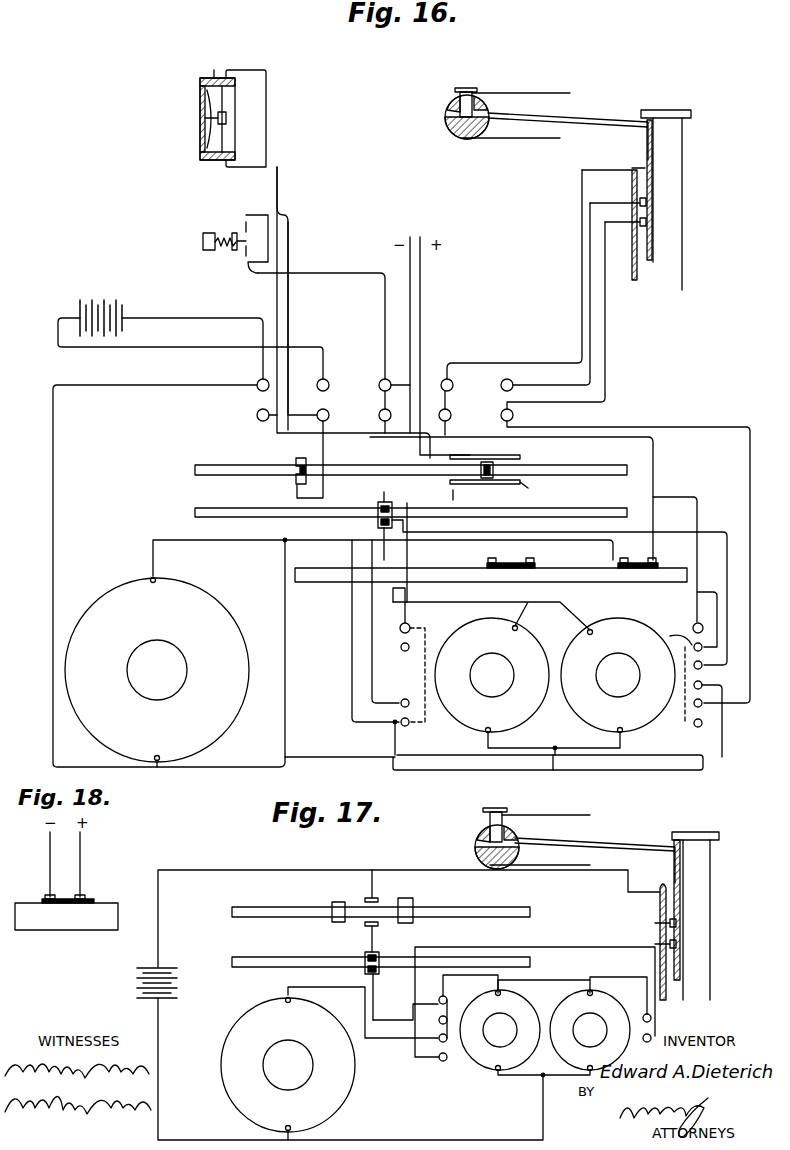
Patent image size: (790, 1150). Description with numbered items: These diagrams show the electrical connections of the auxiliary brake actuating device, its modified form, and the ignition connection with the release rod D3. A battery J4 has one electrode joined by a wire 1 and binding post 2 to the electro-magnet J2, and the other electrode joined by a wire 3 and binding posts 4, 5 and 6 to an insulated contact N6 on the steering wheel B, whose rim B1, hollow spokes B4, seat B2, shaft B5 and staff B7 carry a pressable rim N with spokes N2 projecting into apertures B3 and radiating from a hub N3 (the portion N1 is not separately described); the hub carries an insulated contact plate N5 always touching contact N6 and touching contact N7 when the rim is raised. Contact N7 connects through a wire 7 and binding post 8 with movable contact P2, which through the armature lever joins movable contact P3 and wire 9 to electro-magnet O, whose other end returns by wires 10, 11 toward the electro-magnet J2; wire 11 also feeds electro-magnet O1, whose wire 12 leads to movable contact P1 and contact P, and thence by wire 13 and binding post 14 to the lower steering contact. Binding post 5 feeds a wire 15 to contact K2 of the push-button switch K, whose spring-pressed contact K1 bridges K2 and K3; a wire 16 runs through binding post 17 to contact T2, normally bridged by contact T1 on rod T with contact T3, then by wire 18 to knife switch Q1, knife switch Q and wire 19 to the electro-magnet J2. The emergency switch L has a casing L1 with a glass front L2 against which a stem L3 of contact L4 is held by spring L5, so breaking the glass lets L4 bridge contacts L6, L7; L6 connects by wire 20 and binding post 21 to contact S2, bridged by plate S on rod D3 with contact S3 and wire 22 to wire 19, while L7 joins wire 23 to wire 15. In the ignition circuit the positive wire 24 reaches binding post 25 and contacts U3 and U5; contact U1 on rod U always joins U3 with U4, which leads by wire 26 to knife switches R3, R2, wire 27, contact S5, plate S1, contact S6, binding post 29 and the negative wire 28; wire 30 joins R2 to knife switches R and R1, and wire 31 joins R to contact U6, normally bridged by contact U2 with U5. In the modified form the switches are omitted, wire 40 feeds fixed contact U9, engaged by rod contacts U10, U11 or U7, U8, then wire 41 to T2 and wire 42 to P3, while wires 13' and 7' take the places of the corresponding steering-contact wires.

In FIG. 16, the emergency switch L is at (205, 318).
In FIG. 16, the casing L1 is at (205, 160).
In FIG. 16, the glass front L2 is at (205, 132).
In FIG. 16, the stem L3 is at (205, 118).
In FIG. 16, the contact L4 is at (226, 118).
In FIG. 16, the spring L5 is at (214, 78).
In FIG. 16, the contact L6 is at (226, 144).
In FIG. 16, the contact L7 is at (226, 100).
In FIG. 16, the wire 23 is at (268, 100).
In FIG. 16, the wire 20 is at (278, 196).
In FIG. 16, the switch K is at (218, 232).
In FIG. 16, the spring-pressed contact K1 is at (210, 250).
In FIG. 16, the contact K2 is at (246, 255).
In FIG. 16, the contact K3 is at (246, 224).
In FIG. 16, the wire 16 is at (289, 246).
In FIG. 16, the wire 15 is at (345, 276).
In FIG. 16, the negative wire 28 is at (408, 338).
In FIG. 18, the negative wire 28 is at (50, 850).
In FIG. 16, the positive wire 24 is at (421, 310).
In FIG. 18, the positive wire 24 is at (81, 850).
In FIG. 16, the battery J4 is at (96, 302).
In FIG. 17, the battery J4 is at (136, 982).
In FIG. 16, the wire 3 is at (170, 348).
In FIG. 17, the wire 3 is at (230, 870).
In FIG. 16, the wire 1 is at (54, 508).
In FIG. 17, the wire 1 is at (160, 1086).
In FIG. 16, the binding post 2 is at (257, 384).
In FIG. 16, the binding post 4 is at (328, 382).
In FIG. 16, the binding post 5 is at (389, 380).
In FIG. 16, the binding post 6 is at (452, 382).
In FIG. 16, the binding post 8 is at (510, 380).
In FIG. 16, the binding post 21 is at (257, 416).
In FIG. 16, the binding post 17 is at (329, 414).
In FIG. 16, the binding post 29 is at (384, 409).
In FIG. 16, the binding post 25 is at (451, 415).
In FIG. 16, the binding post 14 is at (513, 415).
In FIG. 16, the wire 13 is at (641, 530).
In FIG. 16, the wire 7 is at (467, 493).
In FIG. 16, the wire 27 is at (352, 680).
In FIG. 16, the rim B1 is at (448, 104).
In FIG. 17, the rim B1 is at (478, 838).
In FIG. 16, the rim N is at (478, 90).
In FIG. 17, the rim N is at (498, 808).
In FIG. 16, the apertures B3 is at (500, 98).
In FIG. 16, the pivot bearing N1 is at (447, 118).
In FIG. 17, the pivot bearing N1 is at (506, 822).
In FIG. 16, the hollow spokes B4 is at (452, 128).
In FIG. 16, the seat B2 is at (465, 142).
In FIG. 17, the seat B2 is at (484, 820).
In FIG. 16, the steering wheel B is at (536, 140).
In FIG. 17, the steering wheel B is at (555, 815).
In FIG. 16, the spokes N2 is at (584, 126).
In FIG. 17, the spokes N2 is at (640, 845).
In FIG. 16, the shaft B5 is at (683, 250).
In FIG. 17, the shaft B5 is at (711, 938).
In FIG. 16, the insulated contact plate N5 is at (647, 140).
In FIG. 17, the insulated contact plate N5 is at (680, 877).
In FIG. 16, the insulated contact N6 is at (632, 168).
In FIG. 17, the insulated contact N6 is at (660, 898).
In FIG. 16, the insulated contact N7 is at (648, 202).
In FIG. 17, the insulated contact N7 is at (676, 922).
In FIG. 16, the hub or sleeve N3 is at (638, 226).
In FIG. 17, the hub or sleeve N3 is at (676, 946).
In FIG. 16, the staff B7 is at (632, 264).
In FIG. 16, the rod U is at (222, 468).
In FIG. 17, the rod U is at (303, 908).
In FIG. 16, the contact U1 is at (488, 462).
In FIG. 16, the contact U2 is at (298, 472).
In FIG. 16, the contact U3 is at (520, 457).
In FIG. 16, the contact U4 is at (499, 487).
In FIG. 16, the contact U5 is at (296, 460).
In FIG. 16, the contact U6 is at (298, 484).
In FIG. 17, the contact U7 is at (413, 902).
In FIG. 17, the contact U8 is at (414, 922).
In FIG. 17, the fixed contact U9 is at (378, 898).
In FIG. 17, the contact U10 is at (340, 902).
In FIG. 17, the contact U11 is at (338, 922).
In FIG. 16, the rod T is at (232, 510).
In FIG. 17, the rod T is at (288, 960).
In FIG. 16, the contact T1 is at (378, 514).
In FIG. 17, the contact T1 is at (365, 966).
In FIG. 16, the contact T2 is at (388, 504).
In FIG. 17, the contact T2 is at (379, 954).
In FIG. 16, the contact T3 is at (384, 540).
In FIG. 17, the contact T3 is at (384, 997).
In FIG. 16, the wire 26 is at (408, 604).
In FIG. 16, the wire 18 is at (733, 582).
In FIG. 16, the wire 22 is at (352, 533).
In FIG. 16, the wire 31 is at (664, 500).
In FIG. 16, the wire 12 is at (718, 634).
In FIG. 17, the wire 12 is at (556, 982).
In FIG. 16, the release rod D3 is at (310, 582).
In FIG. 18, the release rod D3 is at (64, 930).
In FIG. 16, the contact plate S is at (636, 570).
In FIG. 16, the contact plate S1 is at (508, 568).
In FIG. 16, the contact S2 is at (656, 562).
In FIG. 18, the contact S2 is at (60, 904).
In FIG. 16, the contact S3 is at (620, 562).
In FIG. 16, the contact S5 is at (535, 564).
In FIG. 18, the contact S5 is at (86, 894).
In FIG. 16, the contact S6 is at (488, 570).
In FIG. 18, the contact S6 is at (46, 894).
In FIG. 16, the wire 19 is at (730, 766).
In FIG. 17, the wire 19 is at (287, 987).
In FIG. 16, the electro-magnet J2 is at (95, 606).
In FIG. 17, the electro-magnet J2 is at (236, 1028).
In FIG. 16, the electro-magnet O1 is at (455, 712).
In FIG. 17, the electro-magnet O1 is at (488, 1064).
In FIG. 16, the electro-magnet O is at (645, 720).
In FIG. 17, the electro-magnet O is at (570, 1048).
In FIG. 16, the wire 9 is at (466, 602).
In FIG. 17, the wire 9 is at (565, 977).
In FIG. 16, the wire 11 is at (516, 734).
In FIG. 17, the wire 11 is at (516, 1076).
In FIG. 16, the wire 10 is at (584, 734).
In FIG. 17, the wire 10 is at (412, 1140).
In FIG. 16, the wire 30 is at (442, 771).
In FIG. 16, the knife switch R1 is at (692, 626).
In FIG. 16, the movable contact P1 is at (682, 637).
In FIG. 17, the movable contact P1 is at (644, 1014).
In FIG. 16, the knife switch Q1 is at (694, 665).
In FIG. 16, the knife switch Q is at (694, 685).
In FIG. 16, the movable contact P is at (703, 704).
In FIG. 17, the movable contact P is at (644, 1042).
In FIG. 16, the knife switch R is at (694, 726).
In FIG. 16, the movable contact P3 is at (394, 656).
In FIG. 17, the movable contact P3 is at (440, 1018).
In FIG. 16, the movable contact P2 is at (401, 702).
In FIG. 17, the movable contact P2 is at (448, 1038).
In FIG. 16, the knife switch R2 is at (406, 727).
In FIG. 17, the knife switch R2 is at (444, 1062).
In FIG. 17, the knife switch R3 is at (468, 988).
In FIG. 17, the wire 40 is at (370, 876).
In FIG. 17, the wire 41 is at (370, 932).
In FIG. 17, the wire 42 is at (405, 1012).
In FIG. 17, the wire 13' is at (601, 935).
In FIG. 17, the wire 7' is at (667, 1013).